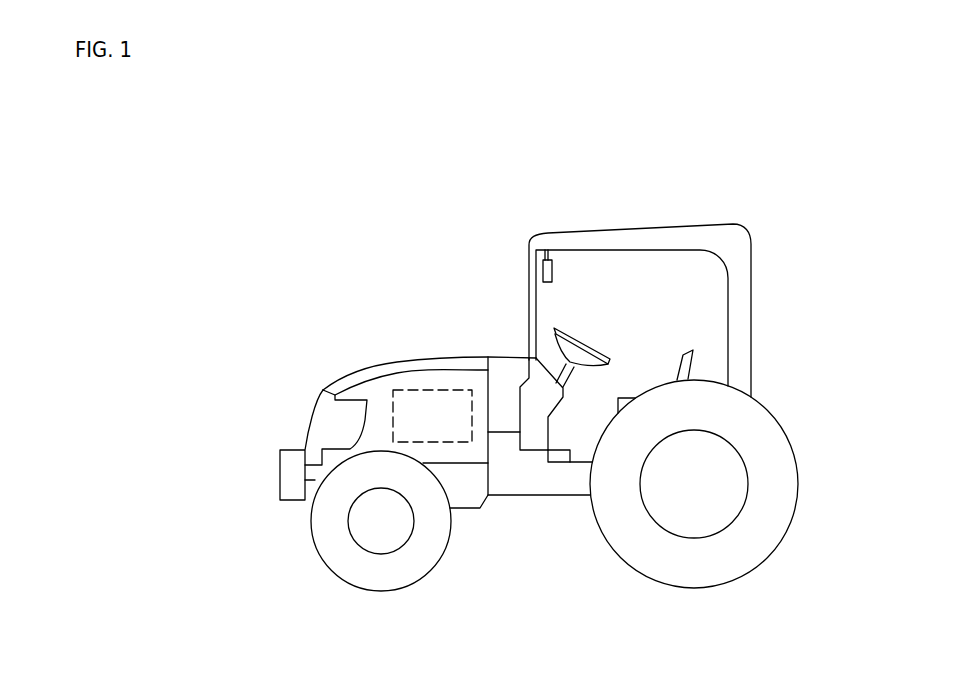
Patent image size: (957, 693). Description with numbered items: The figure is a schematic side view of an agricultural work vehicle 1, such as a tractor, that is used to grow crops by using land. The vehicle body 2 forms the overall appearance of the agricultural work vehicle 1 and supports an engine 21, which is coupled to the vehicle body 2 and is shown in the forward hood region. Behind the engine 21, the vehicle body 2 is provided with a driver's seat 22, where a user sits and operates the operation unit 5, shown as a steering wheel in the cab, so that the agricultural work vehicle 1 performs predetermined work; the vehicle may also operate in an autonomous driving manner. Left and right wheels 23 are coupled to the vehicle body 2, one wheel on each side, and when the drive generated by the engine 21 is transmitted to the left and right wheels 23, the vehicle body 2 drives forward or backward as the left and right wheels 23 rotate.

The agricultural work vehicle 1 is at (277, 193).
The vehicle body 2 is at (373, 366).
The engine 21 is at (420, 388).
The driver's seat 22 is at (687, 365).
The left and right wheels 23 is at (773, 490).
The operation unit 5 is at (553, 330).